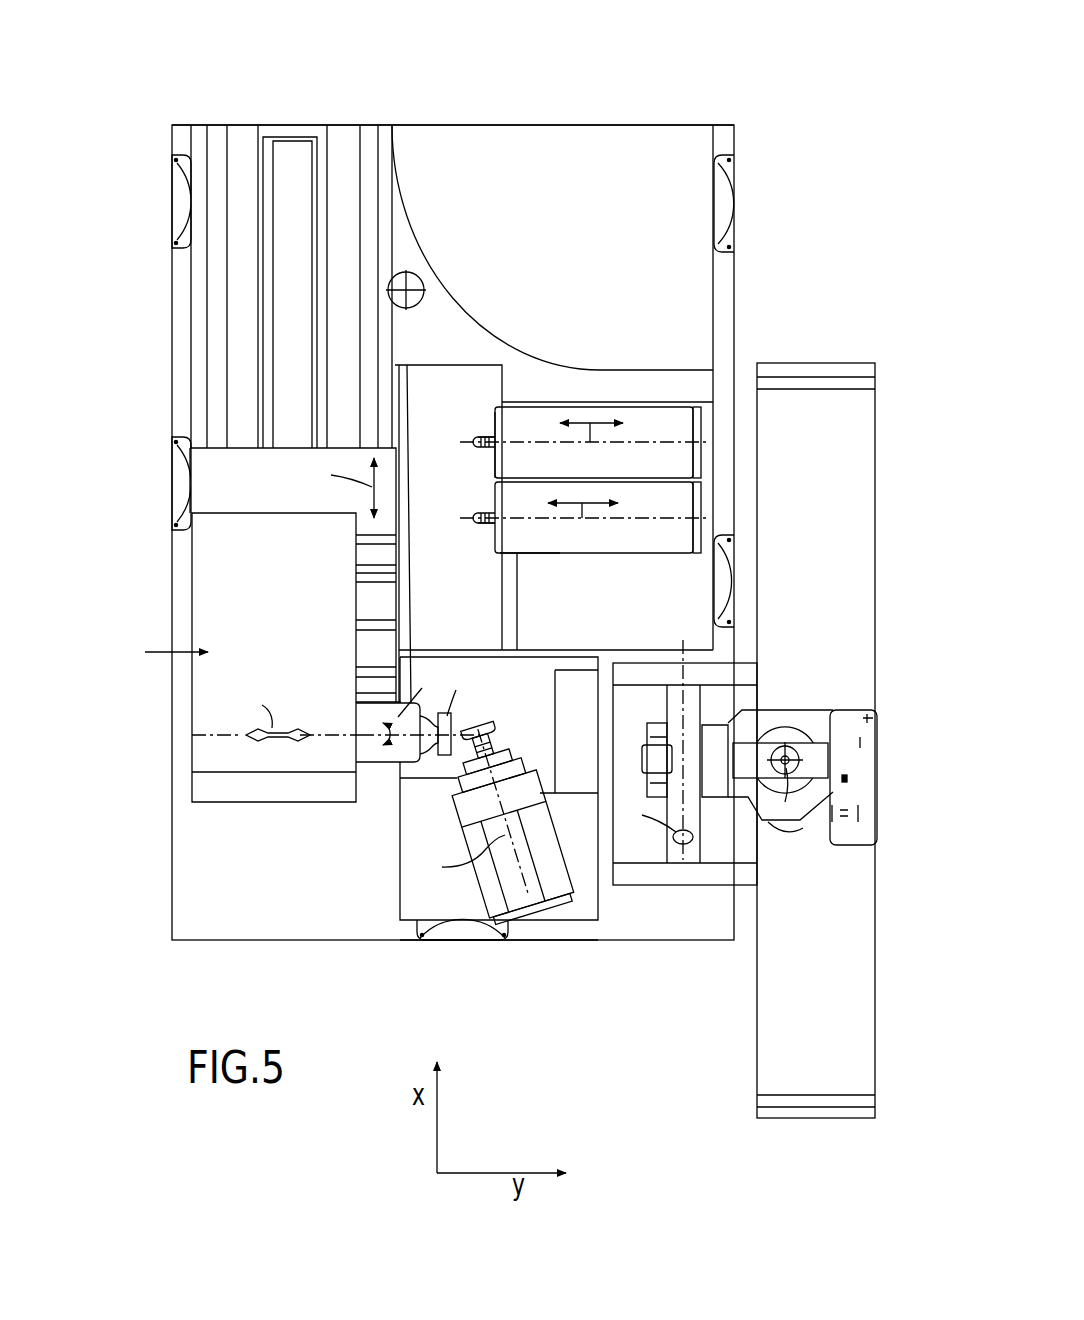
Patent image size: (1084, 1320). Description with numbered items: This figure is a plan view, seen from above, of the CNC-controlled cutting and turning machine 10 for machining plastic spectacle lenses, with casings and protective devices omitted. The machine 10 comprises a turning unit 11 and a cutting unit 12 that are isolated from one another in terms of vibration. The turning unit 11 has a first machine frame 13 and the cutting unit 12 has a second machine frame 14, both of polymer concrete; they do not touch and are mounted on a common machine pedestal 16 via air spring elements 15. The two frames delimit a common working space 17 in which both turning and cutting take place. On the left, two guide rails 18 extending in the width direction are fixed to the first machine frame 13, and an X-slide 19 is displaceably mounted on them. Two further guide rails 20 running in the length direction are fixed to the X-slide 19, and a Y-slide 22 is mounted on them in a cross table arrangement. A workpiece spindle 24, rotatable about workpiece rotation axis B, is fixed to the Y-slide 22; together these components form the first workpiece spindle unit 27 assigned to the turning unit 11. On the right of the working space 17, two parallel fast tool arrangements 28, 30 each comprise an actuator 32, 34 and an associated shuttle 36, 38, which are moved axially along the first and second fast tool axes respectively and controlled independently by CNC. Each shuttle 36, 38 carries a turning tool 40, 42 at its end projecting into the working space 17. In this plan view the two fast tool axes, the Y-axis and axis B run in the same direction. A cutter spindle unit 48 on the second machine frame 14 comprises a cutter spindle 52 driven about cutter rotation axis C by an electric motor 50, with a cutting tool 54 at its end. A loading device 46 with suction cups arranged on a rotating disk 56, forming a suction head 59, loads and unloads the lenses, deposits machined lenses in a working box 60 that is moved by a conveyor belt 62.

The cutting and turning machine 10 is at (638, 82).
The turning unit 11 is at (613, 362).
The cutting unit 12 is at (478, 946).
The first machine frame 13 is at (654, 608).
The second machine frame 14 is at (435, 824).
The air spring elements 15 is at (182, 197).
The machine pedestal 16 is at (217, 920).
The working space 17 is at (425, 384).
The guide rails 18 is at (218, 137).
The X-slide 19 is at (254, 489).
The guide rails 20 is at (364, 535).
The Y-slide 22 is at (242, 601).
The workpiece spindle 24 is at (365, 750).
The first workpiece spindle unit 27 is at (163, 651).
The first fast tool arrangement 28 is at (525, 544).
The second fast tool arrangement 30 is at (534, 416).
The actuator 32 is at (670, 516).
The actuator 34 is at (660, 441).
The shuttle 36 is at (490, 524).
The shuttle 38 is at (487, 436).
The turning tool 40 is at (470, 518).
The turning tool 42 is at (470, 440).
The loading device 46 is at (772, 722).
The cutter spindle unit 48 is at (529, 880).
The electric motor 50 is at (550, 904).
The cutter spindle 52 is at (506, 763).
The cutting tool 54 is at (487, 726).
The rotating disk 56 is at (830, 735).
The suction head 59 is at (842, 763).
The working box 60 is at (850, 835).
The conveyor belt 62 is at (827, 987).